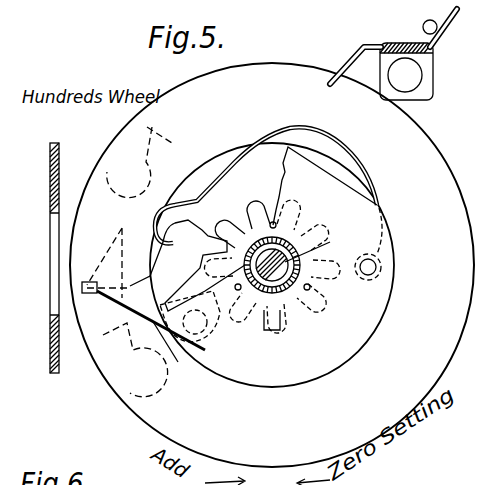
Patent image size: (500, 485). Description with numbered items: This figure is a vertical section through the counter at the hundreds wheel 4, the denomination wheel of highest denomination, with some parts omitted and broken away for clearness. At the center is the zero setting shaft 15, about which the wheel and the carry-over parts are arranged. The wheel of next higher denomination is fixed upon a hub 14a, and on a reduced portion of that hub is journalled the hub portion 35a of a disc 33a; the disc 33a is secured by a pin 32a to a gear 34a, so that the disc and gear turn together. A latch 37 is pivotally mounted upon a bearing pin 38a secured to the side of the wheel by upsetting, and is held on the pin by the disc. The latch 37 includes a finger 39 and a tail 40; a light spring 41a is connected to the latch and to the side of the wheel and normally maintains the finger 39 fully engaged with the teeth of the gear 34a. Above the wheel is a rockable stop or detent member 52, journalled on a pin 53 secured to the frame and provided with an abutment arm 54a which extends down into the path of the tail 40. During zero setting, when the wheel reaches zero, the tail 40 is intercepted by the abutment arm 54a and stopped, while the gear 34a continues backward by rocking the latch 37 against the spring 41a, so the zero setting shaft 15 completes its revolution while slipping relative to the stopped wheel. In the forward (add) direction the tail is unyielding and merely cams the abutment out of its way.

The denomination wheel 4 is at (115, 150).
The disc 33a is at (382, 313).
The light spring 41a is at (242, 152).
The hub 14a is at (366, 256).
The bearing pin 38a is at (187, 265).
The tail 40 is at (143, 316).
The latch 37 is at (176, 351).
The finger 39 is at (206, 240).
The gear 34a is at (256, 204).
The zero setting shaft 15 is at (279, 257).
The pin 32a is at (236, 291).
The hub portion 35a is at (273, 293).
The stop or detent member 52 is at (405, 43).
The pin 53 is at (416, 76).
The abutment arm 54a is at (338, 70).